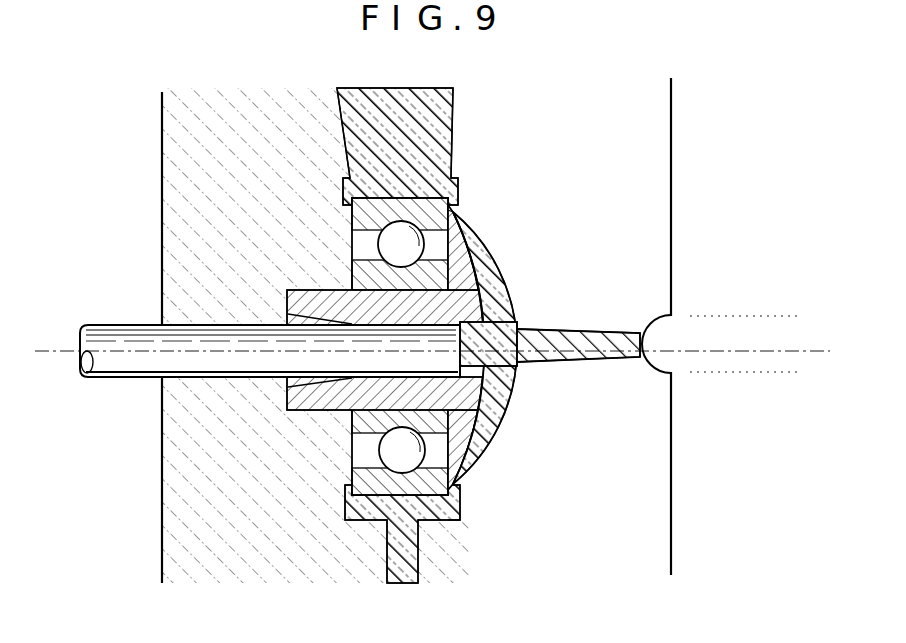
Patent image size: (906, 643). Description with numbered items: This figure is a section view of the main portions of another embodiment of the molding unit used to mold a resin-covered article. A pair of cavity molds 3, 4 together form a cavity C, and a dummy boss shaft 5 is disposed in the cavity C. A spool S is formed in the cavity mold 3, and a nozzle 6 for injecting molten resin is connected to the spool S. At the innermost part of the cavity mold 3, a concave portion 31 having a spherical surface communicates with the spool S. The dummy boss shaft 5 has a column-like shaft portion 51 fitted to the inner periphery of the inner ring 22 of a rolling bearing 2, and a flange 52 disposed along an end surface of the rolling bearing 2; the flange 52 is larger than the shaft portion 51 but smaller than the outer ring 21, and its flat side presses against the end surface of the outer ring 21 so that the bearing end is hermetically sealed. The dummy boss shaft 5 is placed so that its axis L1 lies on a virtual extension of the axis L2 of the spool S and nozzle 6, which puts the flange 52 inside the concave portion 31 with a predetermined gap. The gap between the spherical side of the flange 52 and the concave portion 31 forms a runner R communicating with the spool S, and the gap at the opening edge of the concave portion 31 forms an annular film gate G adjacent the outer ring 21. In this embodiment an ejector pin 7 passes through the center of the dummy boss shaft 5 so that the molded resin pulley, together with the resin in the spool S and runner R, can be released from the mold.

The rolling bearing 2 is at (424, 209).
The outer ring 21 is at (352, 215).
The inner ring 22 is at (352, 254).
The cavity mold 3 is at (675, 513).
The concave portion 31 is at (508, 297).
The cavity mold 4 is at (160, 540).
The dummy boss shaft 5 is at (287, 293).
The shaft portion 51 is at (320, 412).
The flange 52 is at (471, 410).
The nozzle 6 is at (740, 372).
The ejector pin 7 is at (120, 378).
The runner R is at (478, 254).
The film gate G is at (449, 213).
The spool S is at (600, 335).
The axis of the dummy boss shaft L1 is at (33, 353).
The axis of the spool and nozzle L2 is at (802, 342).
The cavity C is at (434, 522).